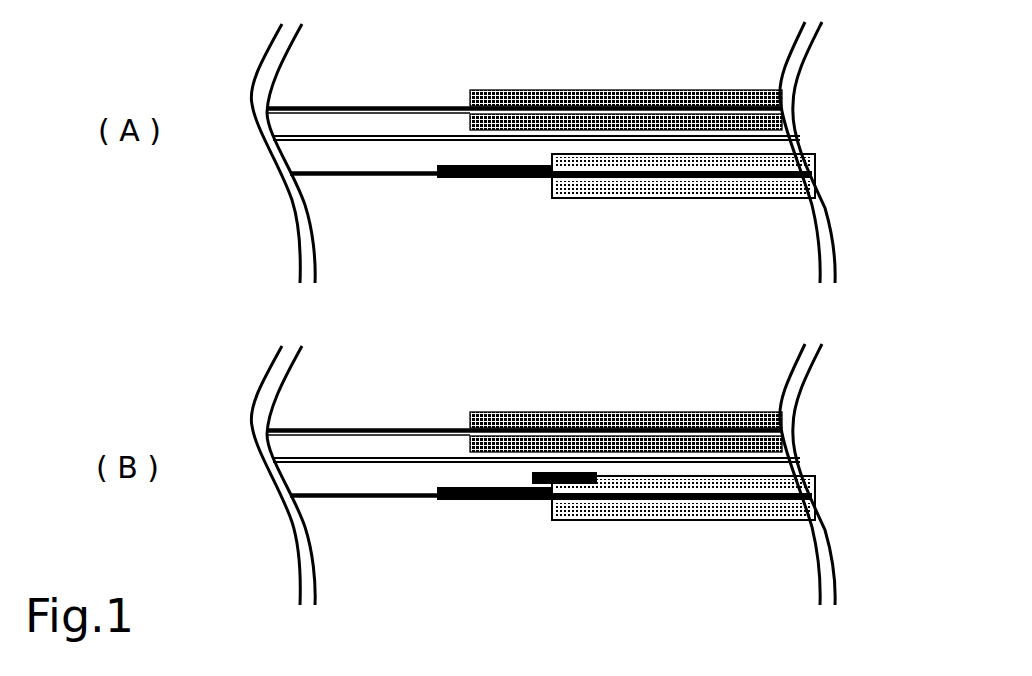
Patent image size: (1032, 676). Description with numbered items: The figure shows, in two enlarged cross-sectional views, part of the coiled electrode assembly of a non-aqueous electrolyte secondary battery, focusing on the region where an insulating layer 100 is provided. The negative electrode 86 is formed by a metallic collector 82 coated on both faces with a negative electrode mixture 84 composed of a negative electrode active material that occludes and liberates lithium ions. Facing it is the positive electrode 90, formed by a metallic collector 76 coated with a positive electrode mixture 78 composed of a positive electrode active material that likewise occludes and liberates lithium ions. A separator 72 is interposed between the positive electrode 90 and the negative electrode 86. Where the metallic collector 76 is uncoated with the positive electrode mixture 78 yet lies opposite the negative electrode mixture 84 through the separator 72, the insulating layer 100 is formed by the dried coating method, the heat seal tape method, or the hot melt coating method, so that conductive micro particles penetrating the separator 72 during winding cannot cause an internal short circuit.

The separator 72 is at (313, 135).
The metallic collector 76 is at (358, 178).
The positive electrode mixture 78 is at (803, 163).
The metallic collector 82 is at (372, 106).
The negative electrode mixture 84 is at (780, 81).
The negative electrode 86 is at (690, 251).
The positive electrode 90 is at (740, 358).
The insulating layer 100 is at (442, 164).